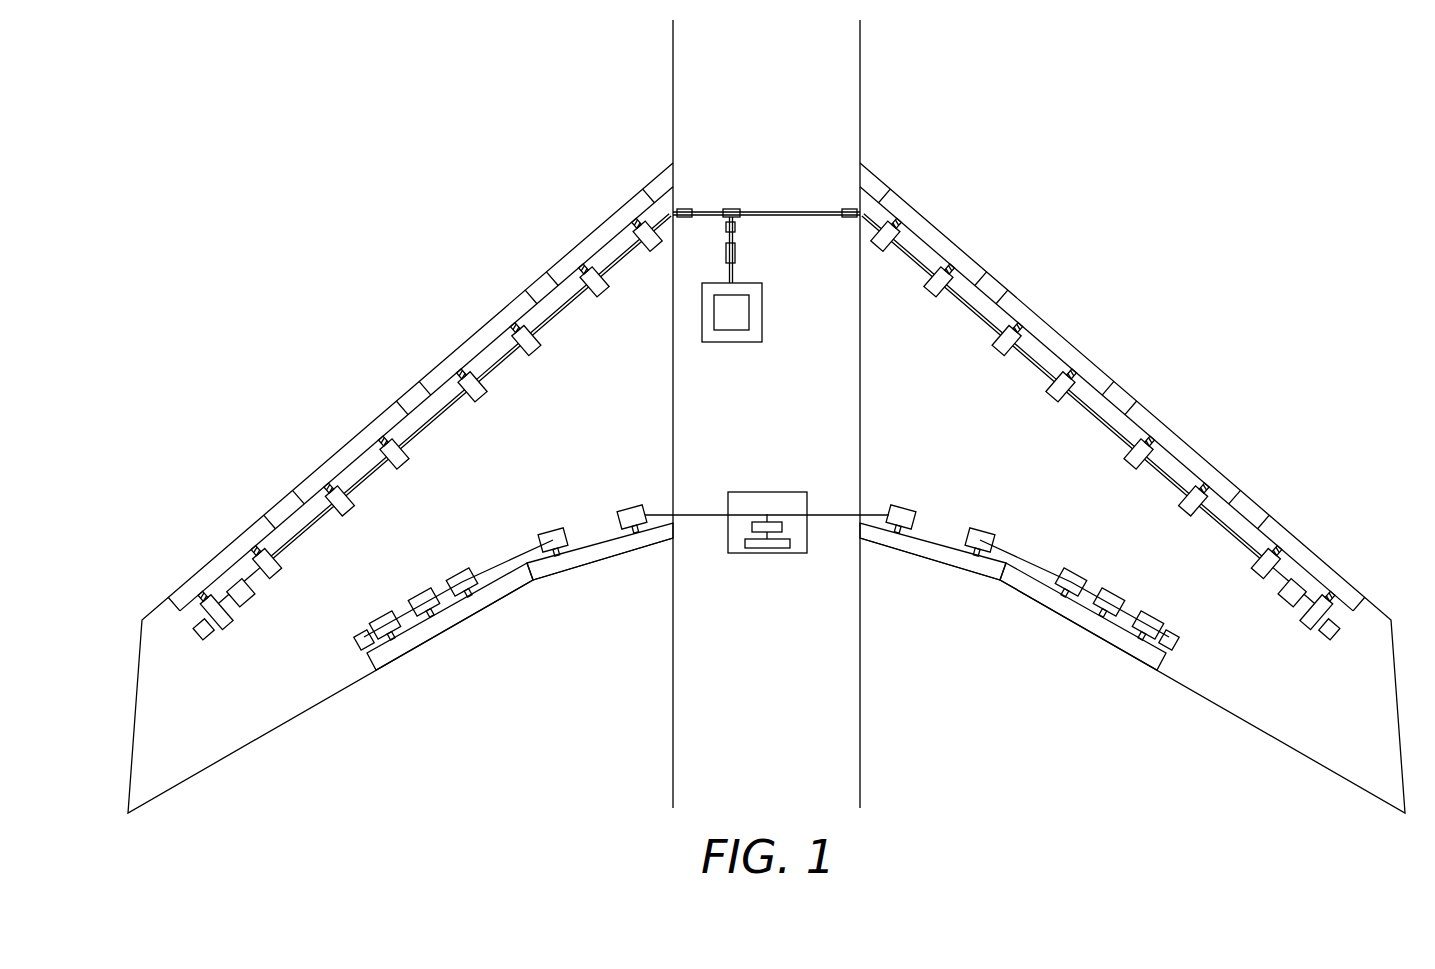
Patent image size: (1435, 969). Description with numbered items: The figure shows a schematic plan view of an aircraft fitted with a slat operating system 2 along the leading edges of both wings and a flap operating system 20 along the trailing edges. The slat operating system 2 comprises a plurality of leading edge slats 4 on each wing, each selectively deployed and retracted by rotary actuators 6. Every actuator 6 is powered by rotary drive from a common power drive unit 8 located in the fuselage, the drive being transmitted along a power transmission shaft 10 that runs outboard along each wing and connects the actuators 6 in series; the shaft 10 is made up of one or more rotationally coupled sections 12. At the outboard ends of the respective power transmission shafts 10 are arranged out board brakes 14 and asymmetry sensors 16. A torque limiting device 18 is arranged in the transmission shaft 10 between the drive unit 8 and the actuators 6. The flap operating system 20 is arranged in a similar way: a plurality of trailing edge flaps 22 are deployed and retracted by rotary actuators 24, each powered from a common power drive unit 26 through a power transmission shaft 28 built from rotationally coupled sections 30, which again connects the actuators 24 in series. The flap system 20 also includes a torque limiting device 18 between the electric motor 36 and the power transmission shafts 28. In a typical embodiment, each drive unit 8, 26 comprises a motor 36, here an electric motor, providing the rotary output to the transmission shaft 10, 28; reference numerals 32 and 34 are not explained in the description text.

The slat operating system 2 is at (1183, 388).
The leading edge slat 4 is at (597, 234).
The rotary actuator 6 is at (655, 250).
The power drive unit 8 is at (745, 343).
The power transmission shaft 10 is at (412, 412).
The rotationally coupled section 12 is at (622, 262).
The out board brake 14 is at (222, 582).
The asymmetry sensor 16 is at (198, 636).
The torque limiting device 18 is at (740, 245).
The flap operating system 20 is at (603, 590).
The trailing edge flap 22 is at (383, 665).
The rotary actuator 24 is at (476, 598).
The power drive unit 26 is at (790, 554).
The power transmission shaft 28 is at (513, 552).
The rotationally coupled section 30 is at (412, 598).
The drive link 32 is at (434, 616).
The outboard end unit 34 is at (357, 645).
The electric motor 36 is at (750, 312).